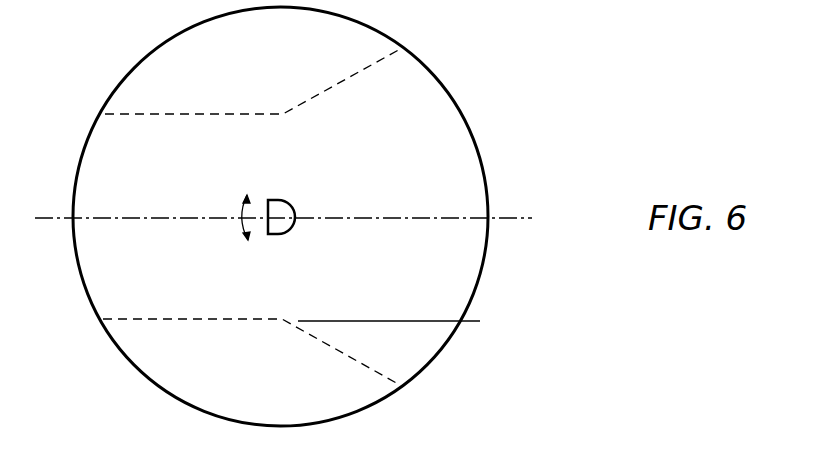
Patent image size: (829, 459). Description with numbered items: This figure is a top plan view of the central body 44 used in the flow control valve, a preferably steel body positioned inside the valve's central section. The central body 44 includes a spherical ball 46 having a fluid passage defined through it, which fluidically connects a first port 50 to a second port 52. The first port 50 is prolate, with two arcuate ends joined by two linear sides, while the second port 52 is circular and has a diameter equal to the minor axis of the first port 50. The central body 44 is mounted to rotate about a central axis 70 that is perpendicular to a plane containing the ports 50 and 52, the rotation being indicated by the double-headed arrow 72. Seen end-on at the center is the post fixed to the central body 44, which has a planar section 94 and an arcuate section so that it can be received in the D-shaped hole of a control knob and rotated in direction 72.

The central body 44 is at (503, 110).
The spherical ball 46 is at (353, 40).
The first port 50 is at (487, 176).
The second port 52 is at (90, 137).
The central axis 70 is at (283, 217).
The double-headed arrow 72 is at (247, 198).
The planar section 94 is at (268, 202).